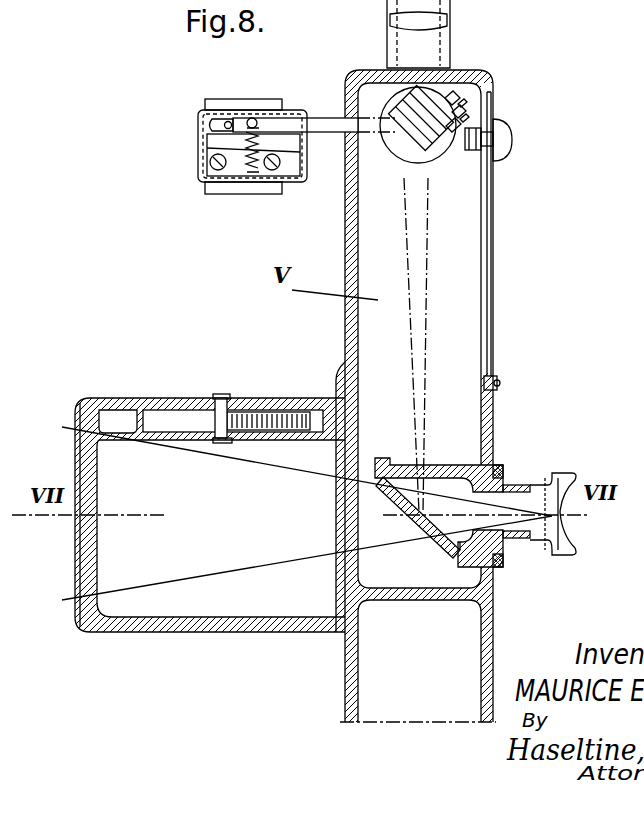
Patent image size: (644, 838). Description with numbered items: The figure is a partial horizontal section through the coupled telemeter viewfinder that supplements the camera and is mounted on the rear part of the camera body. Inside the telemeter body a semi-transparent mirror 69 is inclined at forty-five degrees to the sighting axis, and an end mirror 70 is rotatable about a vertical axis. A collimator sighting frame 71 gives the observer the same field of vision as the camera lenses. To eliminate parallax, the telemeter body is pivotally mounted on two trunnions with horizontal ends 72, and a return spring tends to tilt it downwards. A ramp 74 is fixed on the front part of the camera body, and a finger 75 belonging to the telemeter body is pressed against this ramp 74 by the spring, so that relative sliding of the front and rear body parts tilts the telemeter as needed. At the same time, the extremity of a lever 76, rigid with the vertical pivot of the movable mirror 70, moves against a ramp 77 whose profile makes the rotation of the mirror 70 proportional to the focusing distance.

The semi-transparent mirror 69 is at (443, 537).
The end mirror 70 is at (430, 152).
The collimator sighting frame 71 is at (77, 620).
The trunnions with horizontal ends 72 is at (415, 68).
The ramp 74 is at (252, 413).
The finger 75 is at (200, 400).
The lever 76 is at (319, 124).
The ramp 77 is at (278, 145).